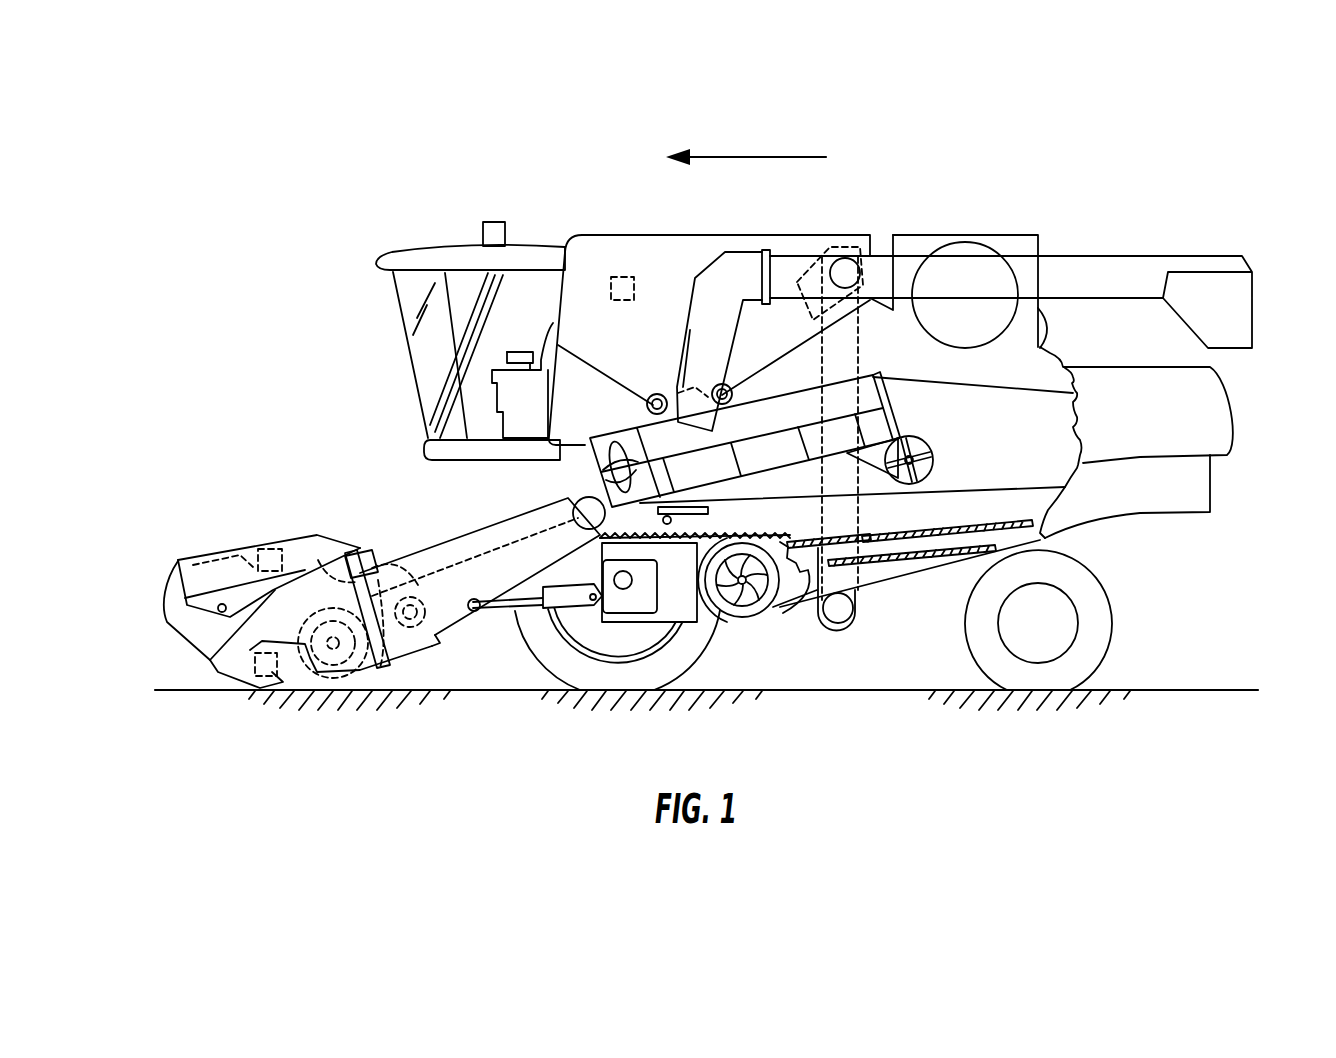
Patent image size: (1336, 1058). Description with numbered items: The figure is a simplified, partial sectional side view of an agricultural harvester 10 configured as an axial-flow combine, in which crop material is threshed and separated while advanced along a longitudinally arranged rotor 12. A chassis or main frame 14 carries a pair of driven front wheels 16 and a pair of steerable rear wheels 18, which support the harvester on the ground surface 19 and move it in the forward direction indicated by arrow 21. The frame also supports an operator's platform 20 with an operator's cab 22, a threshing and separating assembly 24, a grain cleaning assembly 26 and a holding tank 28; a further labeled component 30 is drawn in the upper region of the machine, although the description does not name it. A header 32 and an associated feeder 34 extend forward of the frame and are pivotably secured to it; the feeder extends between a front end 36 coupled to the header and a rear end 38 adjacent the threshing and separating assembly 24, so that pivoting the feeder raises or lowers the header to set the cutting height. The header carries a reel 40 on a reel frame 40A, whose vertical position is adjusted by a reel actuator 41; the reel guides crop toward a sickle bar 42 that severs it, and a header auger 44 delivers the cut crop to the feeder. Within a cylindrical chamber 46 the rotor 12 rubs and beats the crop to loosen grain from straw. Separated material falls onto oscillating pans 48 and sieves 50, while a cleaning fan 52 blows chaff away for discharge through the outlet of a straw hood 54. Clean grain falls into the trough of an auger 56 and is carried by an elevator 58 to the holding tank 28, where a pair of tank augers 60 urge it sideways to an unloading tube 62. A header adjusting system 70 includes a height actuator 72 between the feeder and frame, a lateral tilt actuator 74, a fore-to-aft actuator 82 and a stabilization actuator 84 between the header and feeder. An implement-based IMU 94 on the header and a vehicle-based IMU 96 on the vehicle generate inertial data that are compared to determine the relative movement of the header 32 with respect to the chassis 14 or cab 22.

The agricultural harvester 10 is at (436, 192).
The rotor 12 is at (615, 447).
The chassis or main frame 14 is at (1046, 540).
The front wheels 16 is at (563, 660).
The rear wheels 18 is at (1098, 634).
The ground surface 19 is at (165, 690).
The operator's platform 20 is at (440, 450).
The arrow indicating forward direction of movement 21 is at (758, 157).
The operator's cab 22 is at (420, 352).
The threshing and separating assembly 24 is at (760, 435).
The grain cleaning assembly 26 is at (808, 632).
The holding tank 28 is at (648, 236).
The grain tank 30 is at (948, 243).
The header 32 is at (220, 533).
The feeder 34 is at (417, 566).
The front end of feeder 36 is at (312, 595).
The rear end of feeder 38 is at (565, 483).
The reel 40 is at (180, 587).
The reel frame 40A is at (217, 598).
The reel actuator 41 is at (330, 560).
The sickle bar 42 is at (222, 678).
The header auger 44 is at (330, 662).
The cylindrical chamber 46 is at (786, 400).
The pans 48 is at (736, 540).
The sieves 50 is at (868, 532).
The cleaning fan 52 is at (742, 615).
The straw hood 54 is at (1228, 425).
The auger 56 is at (836, 623).
The elevator 58 is at (863, 336).
The tank augers 60 is at (715, 386).
The unloading tube 62 is at (1094, 270).
The header adjusting system 70 is at (440, 658).
The height actuator 72 is at (540, 607).
The lateral tilt actuator 74 is at (428, 645).
The fore-to-aft actuator 82 is at (340, 563).
The stabilization actuator 84 is at (345, 660).
The implement-based inertial measurement unit 94 is at (262, 550).
The vehicle-based inertial measurement unit 96 is at (619, 278).